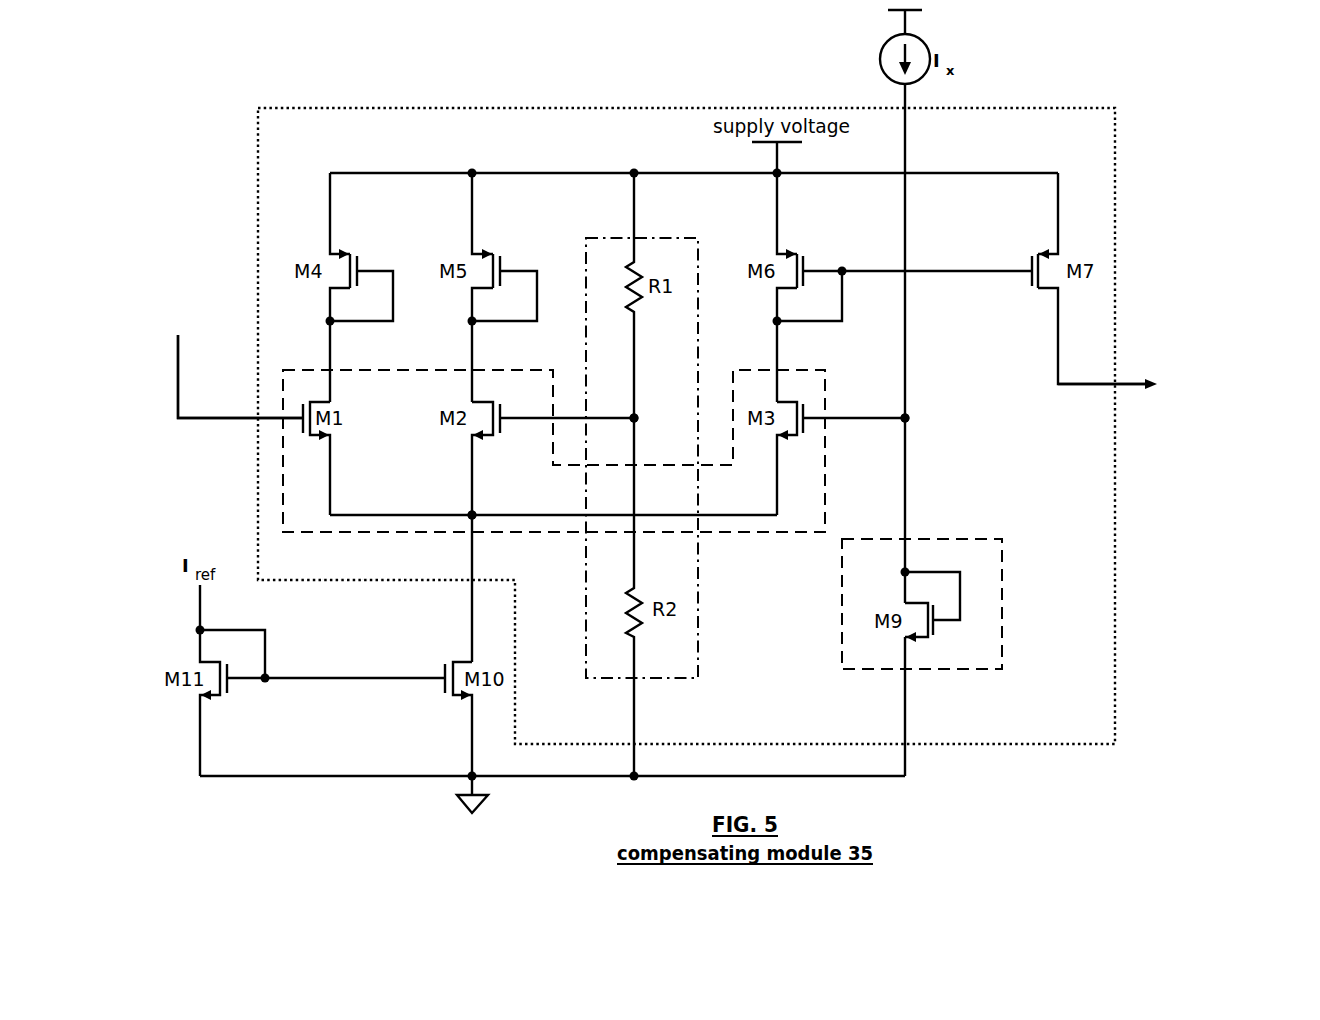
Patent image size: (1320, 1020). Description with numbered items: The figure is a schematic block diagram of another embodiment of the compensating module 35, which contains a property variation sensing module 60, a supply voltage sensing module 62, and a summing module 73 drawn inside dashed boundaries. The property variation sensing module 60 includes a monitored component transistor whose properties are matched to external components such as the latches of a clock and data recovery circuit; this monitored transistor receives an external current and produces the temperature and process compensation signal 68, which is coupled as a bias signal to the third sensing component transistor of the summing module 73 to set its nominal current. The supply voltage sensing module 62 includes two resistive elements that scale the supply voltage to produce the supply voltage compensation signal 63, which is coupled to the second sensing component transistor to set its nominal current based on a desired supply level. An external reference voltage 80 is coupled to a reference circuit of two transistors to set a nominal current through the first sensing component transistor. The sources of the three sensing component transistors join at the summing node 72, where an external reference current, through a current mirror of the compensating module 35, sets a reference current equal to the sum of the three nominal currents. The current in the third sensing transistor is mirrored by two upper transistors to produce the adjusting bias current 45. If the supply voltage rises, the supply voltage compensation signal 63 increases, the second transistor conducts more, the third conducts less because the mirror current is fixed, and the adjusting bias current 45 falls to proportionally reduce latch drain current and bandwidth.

The compensating module 35 is at (323, 108).
The reference voltage 80 is at (220, 349).
The adjusting bias current 45 is at (1167, 383).
The supply voltage sensing module 62 is at (698, 632).
The supply voltage compensation signal 63 is at (644, 410).
The summing node 72 is at (464, 508).
The summing module 73 is at (305, 532).
The temperature and process compensation signal 68 is at (912, 425).
The property variation sensing module 60 is at (1002, 563).